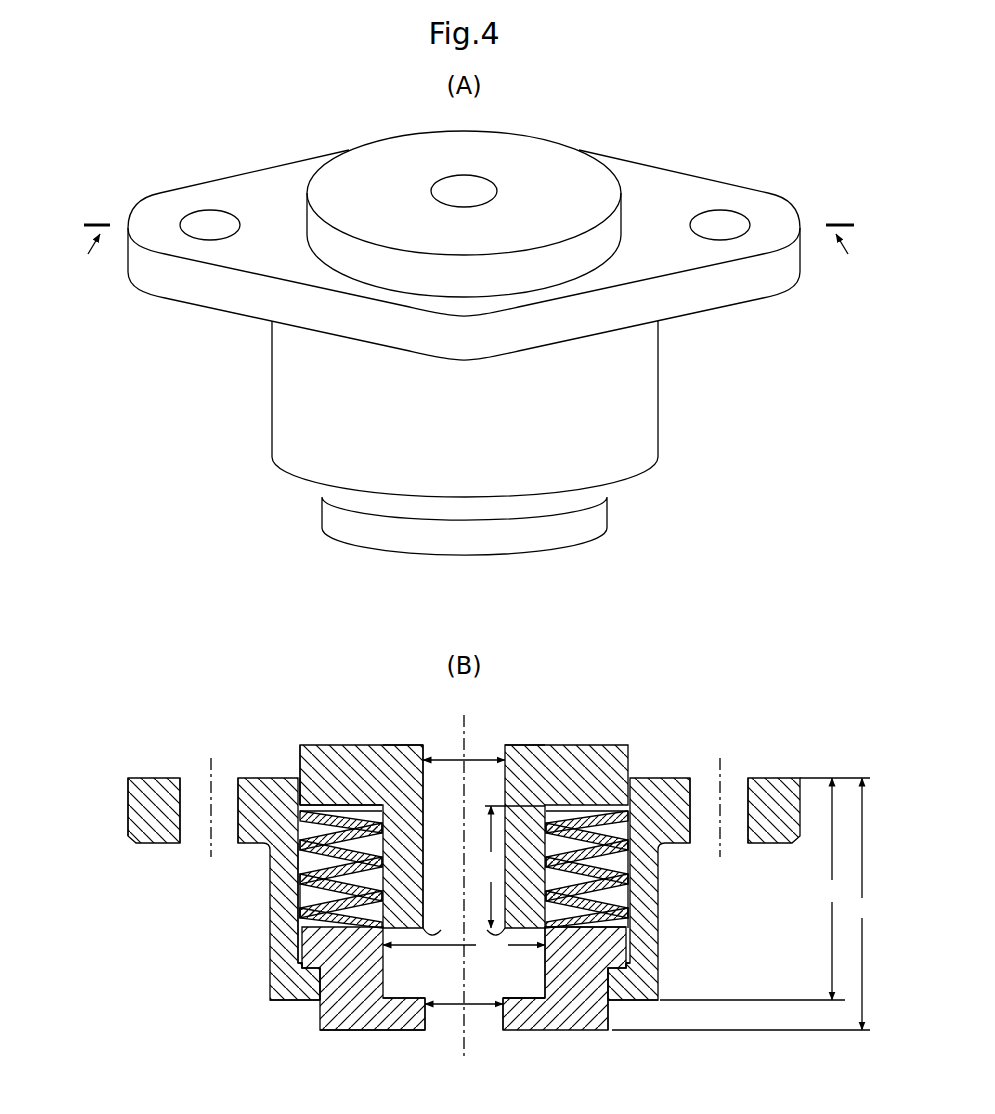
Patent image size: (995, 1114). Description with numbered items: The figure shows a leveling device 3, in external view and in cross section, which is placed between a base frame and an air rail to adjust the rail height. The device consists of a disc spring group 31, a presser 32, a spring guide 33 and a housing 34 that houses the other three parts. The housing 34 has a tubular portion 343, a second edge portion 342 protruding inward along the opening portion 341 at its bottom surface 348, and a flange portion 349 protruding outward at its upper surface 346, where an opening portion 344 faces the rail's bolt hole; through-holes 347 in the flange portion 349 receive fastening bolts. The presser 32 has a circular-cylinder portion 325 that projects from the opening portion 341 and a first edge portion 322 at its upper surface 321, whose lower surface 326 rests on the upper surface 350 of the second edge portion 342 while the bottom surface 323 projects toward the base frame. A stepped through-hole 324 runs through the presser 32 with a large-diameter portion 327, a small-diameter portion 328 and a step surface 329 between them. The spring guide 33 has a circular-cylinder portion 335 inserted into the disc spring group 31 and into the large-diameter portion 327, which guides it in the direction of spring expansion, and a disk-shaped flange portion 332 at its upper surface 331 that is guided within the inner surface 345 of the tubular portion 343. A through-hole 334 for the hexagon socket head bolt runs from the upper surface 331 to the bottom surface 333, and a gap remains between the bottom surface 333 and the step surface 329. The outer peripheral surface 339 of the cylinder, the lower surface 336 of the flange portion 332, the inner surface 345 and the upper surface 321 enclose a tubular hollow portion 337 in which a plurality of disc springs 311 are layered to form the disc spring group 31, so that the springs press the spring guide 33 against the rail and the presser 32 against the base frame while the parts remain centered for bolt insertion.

The leveling device 3 is at (768, 88).
The disc spring group 31 is at (316, 866).
The disc spring 311 is at (299, 900).
The presser 32 is at (608, 504).
The upper surface of the presser 321 is at (558, 929).
The first edge portion 322 is at (631, 953).
The bottom surface of the presser 323 is at (372, 1031).
The stepped through-hole 324 is at (440, 1036).
The circular-cylinder portion of the presser 325 is at (540, 962).
The lower surface of the first edge portion 326 is at (613, 980).
The large-diameter portion 327 is at (445, 960).
The small-diameter portion 328 is at (475, 1031).
The step surface 329 is at (527, 999).
The spring guide 33 is at (514, 135).
The upper surface of the spring guide 331 is at (566, 745).
The flange portion of the spring guide 332 is at (300, 745).
The bottom surface of the spring guide 333 is at (432, 928).
The through-hole of the spring guide 334 is at (476, 741).
The circular-cylinder portion of the spring guide 335 is at (429, 829).
The lower surface of the flange portion 336 is at (341, 808).
The hollow portion 337 is at (620, 868).
The outer peripheral surface 339 is at (367, 808).
The housing 34 is at (658, 373).
The opening portion on the bottom surface side 341 is at (318, 1006).
The second edge portion 342 is at (614, 1002).
The tubular portion 343 is at (270, 908).
The opening portion on the upper surface side 344 is at (637, 773).
The inner surface of the housing 345 is at (299, 803).
The upper surface of the housing 346 is at (148, 778).
The through-holes 347 is at (224, 228).
The bottom surface of the housing 348 is at (272, 1003).
The flange portion of the housing 349 is at (172, 298).
The upper surface of the second edge portion 350 is at (299, 961).